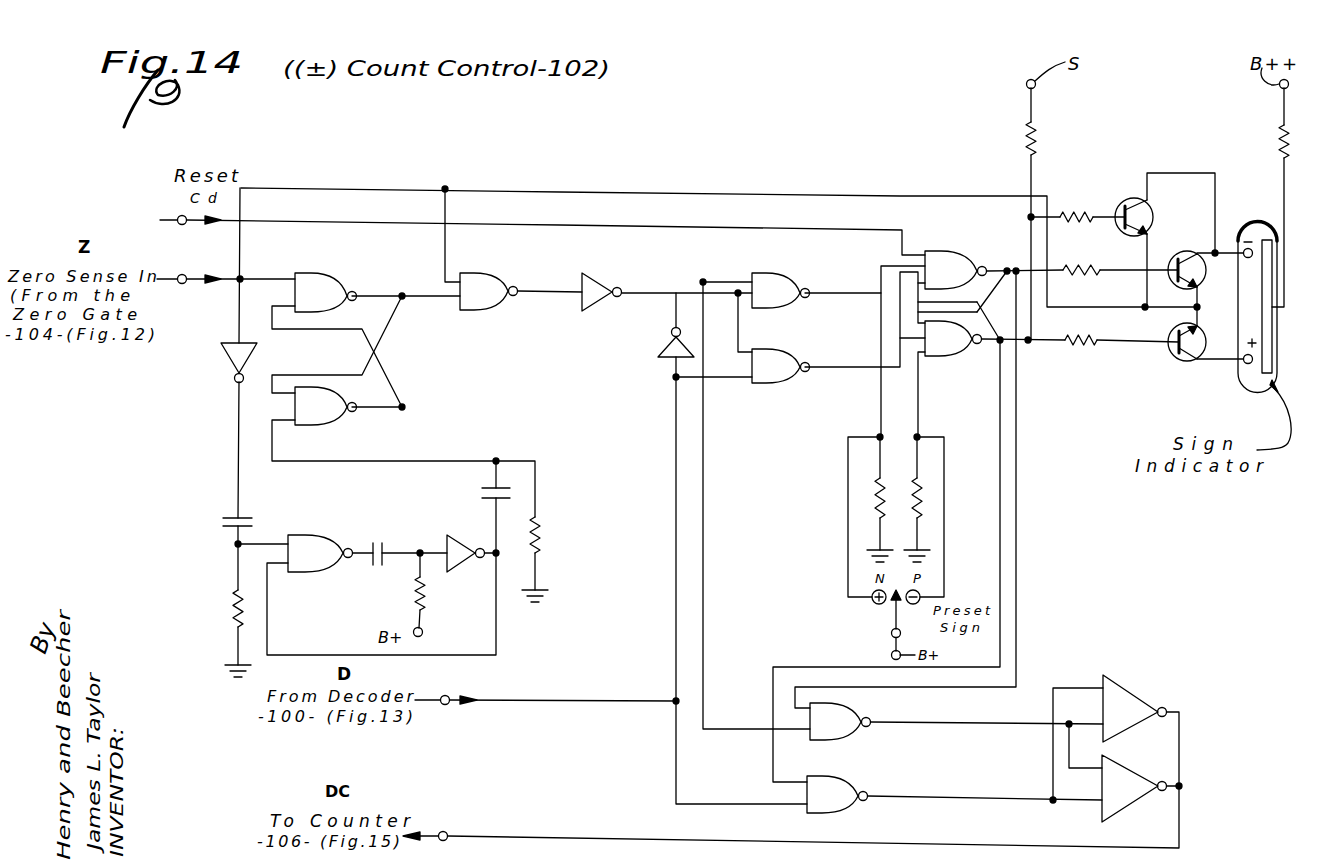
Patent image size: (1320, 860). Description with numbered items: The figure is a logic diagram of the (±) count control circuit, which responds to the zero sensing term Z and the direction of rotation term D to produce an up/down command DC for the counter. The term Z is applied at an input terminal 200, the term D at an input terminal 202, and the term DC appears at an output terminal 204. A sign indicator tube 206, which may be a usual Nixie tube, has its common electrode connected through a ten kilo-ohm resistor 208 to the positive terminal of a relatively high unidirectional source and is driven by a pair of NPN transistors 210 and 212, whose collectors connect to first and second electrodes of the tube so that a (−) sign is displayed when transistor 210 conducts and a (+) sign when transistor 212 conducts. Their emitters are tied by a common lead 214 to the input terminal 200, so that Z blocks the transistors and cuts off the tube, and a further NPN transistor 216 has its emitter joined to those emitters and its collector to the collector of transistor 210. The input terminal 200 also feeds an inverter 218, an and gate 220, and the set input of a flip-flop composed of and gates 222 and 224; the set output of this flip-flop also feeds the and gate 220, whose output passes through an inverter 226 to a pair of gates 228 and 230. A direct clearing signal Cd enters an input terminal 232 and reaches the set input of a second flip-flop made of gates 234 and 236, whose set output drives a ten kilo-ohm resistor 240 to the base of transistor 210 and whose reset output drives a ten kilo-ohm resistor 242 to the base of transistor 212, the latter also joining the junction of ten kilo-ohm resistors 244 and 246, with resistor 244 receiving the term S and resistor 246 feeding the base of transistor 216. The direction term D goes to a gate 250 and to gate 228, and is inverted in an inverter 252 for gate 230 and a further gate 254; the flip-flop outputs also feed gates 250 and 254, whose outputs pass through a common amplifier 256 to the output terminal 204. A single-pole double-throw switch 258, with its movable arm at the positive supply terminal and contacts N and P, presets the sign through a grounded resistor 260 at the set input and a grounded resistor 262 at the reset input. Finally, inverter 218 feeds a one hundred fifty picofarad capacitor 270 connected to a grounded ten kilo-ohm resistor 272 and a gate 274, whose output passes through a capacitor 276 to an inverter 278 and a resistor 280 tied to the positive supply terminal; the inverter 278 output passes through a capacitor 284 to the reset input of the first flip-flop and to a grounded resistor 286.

The input terminal 200 is at (183, 284).
The input terminal 202 is at (450, 697).
The output terminal 204 is at (448, 833).
The sign indicator tube 206 is at (1241, 387).
The resistor 208 is at (1280, 140).
The NPN transistor 210 is at (1177, 252).
The NPN transistor 212 is at (1176, 358).
The common lead 214 is at (840, 196).
The further NPN transistor 216 is at (1150, 210).
The inverter 218 is at (234, 358).
The and gate 220 is at (482, 300).
The and gate 222 is at (322, 288).
The and gate 224 is at (317, 410).
The inverter 226 is at (598, 298).
The gate 228 is at (770, 376).
The gate 230 is at (772, 290).
The input terminal 232 is at (185, 224).
The gate 234 is at (940, 265).
The gate 236 is at (942, 352).
The resistor 240 is at (1100, 256).
The resistor 242 is at (1090, 347).
The resistor 244 is at (1037, 138).
The resistor 246 is at (1076, 208).
The gate 250 is at (842, 806).
The inverter 252 is at (665, 348).
The further gate 254 is at (843, 732).
The amplifier 256 is at (1150, 757).
The single-pole double-throw switch 258 is at (878, 613).
The grounded resistor 260 is at (876, 500).
The grounded resistor 262 is at (922, 498).
The capacitor 270 is at (228, 517).
The grounded resistor 272 is at (230, 610).
The gate 274 is at (308, 542).
The capacitor 276 is at (372, 541).
The inverter 278 is at (465, 530).
The resistor 280 is at (414, 595).
The capacitor 284 is at (484, 487).
The grounded resistor 286 is at (540, 534).